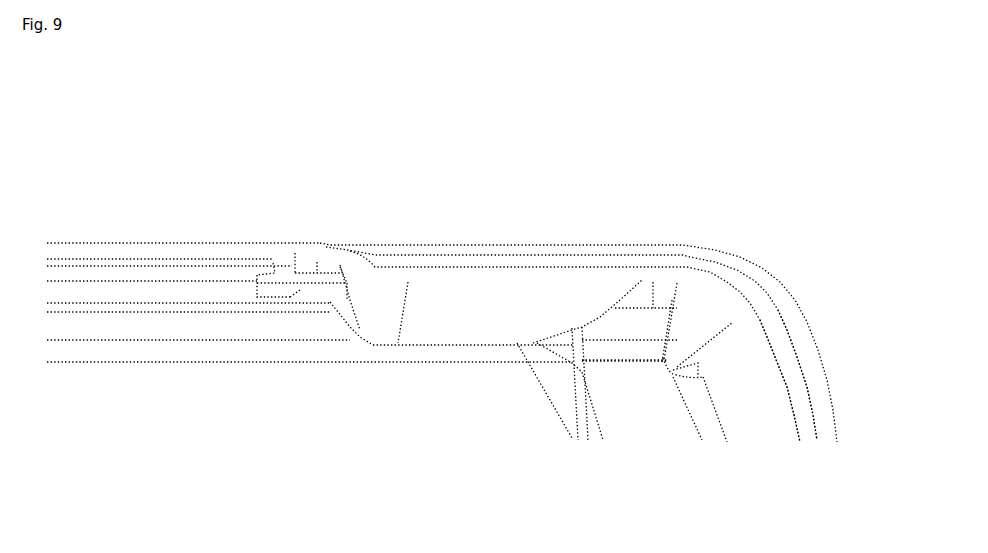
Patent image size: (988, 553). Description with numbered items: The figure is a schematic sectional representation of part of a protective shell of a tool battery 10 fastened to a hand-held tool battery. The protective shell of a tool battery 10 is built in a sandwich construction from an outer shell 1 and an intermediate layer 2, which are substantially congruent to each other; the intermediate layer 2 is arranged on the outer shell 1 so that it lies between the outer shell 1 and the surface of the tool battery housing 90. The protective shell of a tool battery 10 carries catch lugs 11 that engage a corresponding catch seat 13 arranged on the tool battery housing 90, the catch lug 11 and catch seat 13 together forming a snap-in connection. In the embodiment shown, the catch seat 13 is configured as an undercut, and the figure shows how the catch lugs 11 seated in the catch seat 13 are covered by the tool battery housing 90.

The outer shell 1 is at (678, 255).
The intermediate layer 2 is at (792, 397).
The protective shell of a tool battery 10 is at (834, 294).
The catch lug 11 is at (278, 277).
The catch seat 13 is at (285, 260).
The tool battery housing 90 is at (137, 255).